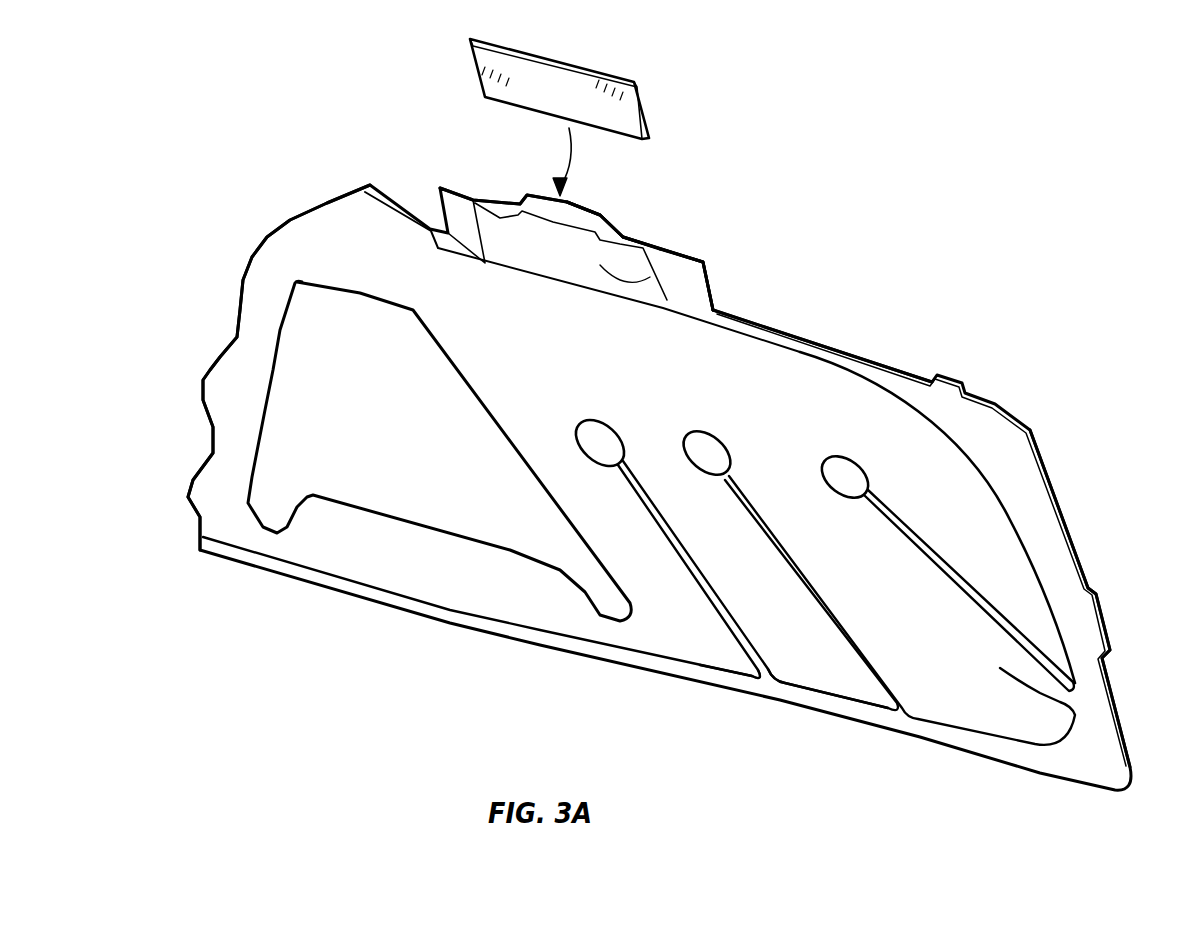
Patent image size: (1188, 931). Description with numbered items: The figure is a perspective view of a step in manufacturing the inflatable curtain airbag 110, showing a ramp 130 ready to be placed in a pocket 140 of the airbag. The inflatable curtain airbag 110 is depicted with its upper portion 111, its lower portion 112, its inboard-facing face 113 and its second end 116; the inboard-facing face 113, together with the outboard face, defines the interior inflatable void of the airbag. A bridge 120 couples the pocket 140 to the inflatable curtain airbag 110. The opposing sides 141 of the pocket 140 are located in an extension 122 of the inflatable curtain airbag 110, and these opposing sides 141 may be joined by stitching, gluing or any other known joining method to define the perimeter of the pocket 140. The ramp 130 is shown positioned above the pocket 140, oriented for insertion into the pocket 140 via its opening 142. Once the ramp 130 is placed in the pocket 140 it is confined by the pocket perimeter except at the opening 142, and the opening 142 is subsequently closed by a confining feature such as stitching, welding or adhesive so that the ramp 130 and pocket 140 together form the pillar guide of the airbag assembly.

The inflatable curtain airbag 110 is at (910, 345).
The upper portion 111 is at (753, 353).
The lower portion 112 is at (810, 663).
The inboard-facing face 113 is at (292, 252).
The second end 116 is at (1050, 543).
The bridge 120 is at (739, 322).
The extension 122 is at (712, 283).
The ramp 130 is at (546, 101).
The pocket 140 is at (693, 273).
The opposing sides 141 is at (640, 241).
The opening 142 is at (612, 225).